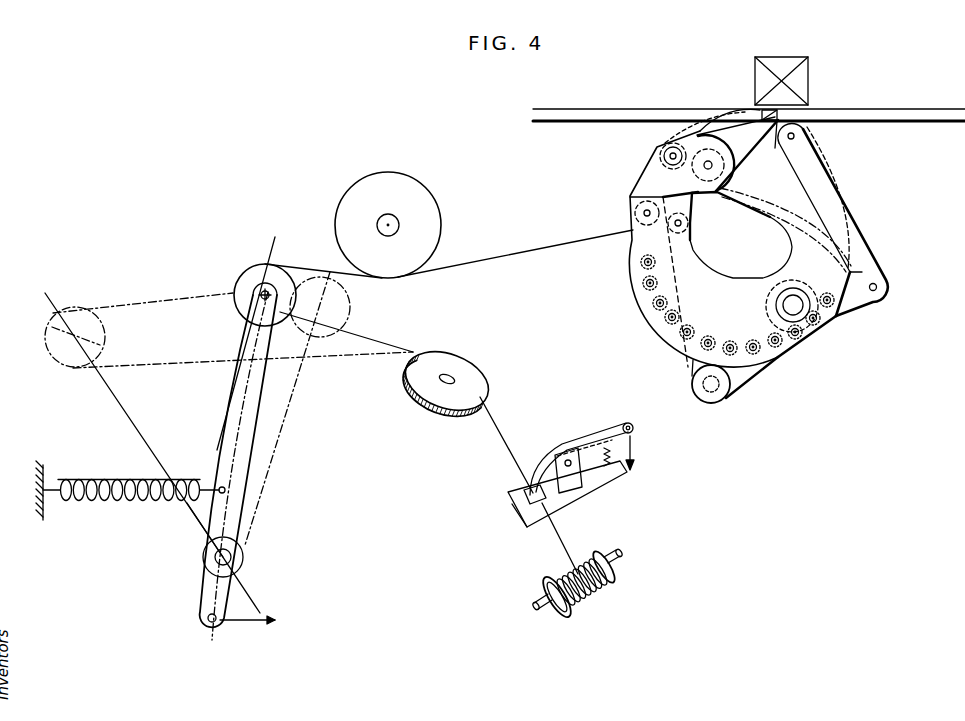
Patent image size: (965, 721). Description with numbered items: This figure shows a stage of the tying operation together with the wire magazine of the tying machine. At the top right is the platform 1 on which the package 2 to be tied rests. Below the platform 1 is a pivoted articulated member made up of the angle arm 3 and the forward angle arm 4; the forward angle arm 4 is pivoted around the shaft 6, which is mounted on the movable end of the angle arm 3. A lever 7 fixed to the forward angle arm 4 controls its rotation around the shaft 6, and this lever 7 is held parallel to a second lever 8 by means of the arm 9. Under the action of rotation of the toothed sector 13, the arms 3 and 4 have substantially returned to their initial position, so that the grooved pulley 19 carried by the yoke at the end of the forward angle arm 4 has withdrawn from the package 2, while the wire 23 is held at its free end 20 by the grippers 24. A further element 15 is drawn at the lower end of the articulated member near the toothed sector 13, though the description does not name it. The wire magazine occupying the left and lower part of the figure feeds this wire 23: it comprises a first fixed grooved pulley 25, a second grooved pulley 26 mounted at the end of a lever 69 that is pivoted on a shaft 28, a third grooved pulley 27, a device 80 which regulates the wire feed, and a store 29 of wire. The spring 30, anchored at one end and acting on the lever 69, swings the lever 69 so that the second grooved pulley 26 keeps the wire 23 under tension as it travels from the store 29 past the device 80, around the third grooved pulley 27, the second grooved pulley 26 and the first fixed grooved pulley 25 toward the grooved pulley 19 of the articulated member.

The platform 1 is at (841, 112).
The package 2 is at (803, 80).
The angle arm 3 is at (783, 220).
The forward angle arm 4 is at (727, 283).
The shaft 6 is at (803, 316).
The lever 7 is at (852, 303).
The lever 8 is at (738, 140).
The arm 9 is at (858, 230).
The toothed sector 13 is at (745, 370).
The roller 15 is at (718, 386).
The grooved pulley 19 is at (698, 134).
The free end 20 is at (779, 152).
The wire 23 is at (572, 247).
The grippers 24 is at (772, 118).
The first fixed grooved pulley 25 is at (433, 229).
The second grooved pulley 26 is at (256, 270).
The third grooved pulley 27 is at (466, 380).
The shaft 28 is at (231, 559).
The store 29 is at (600, 553).
The spring 30 is at (120, 500).
The lever 69 is at (250, 456).
The device 80 is at (567, 497).